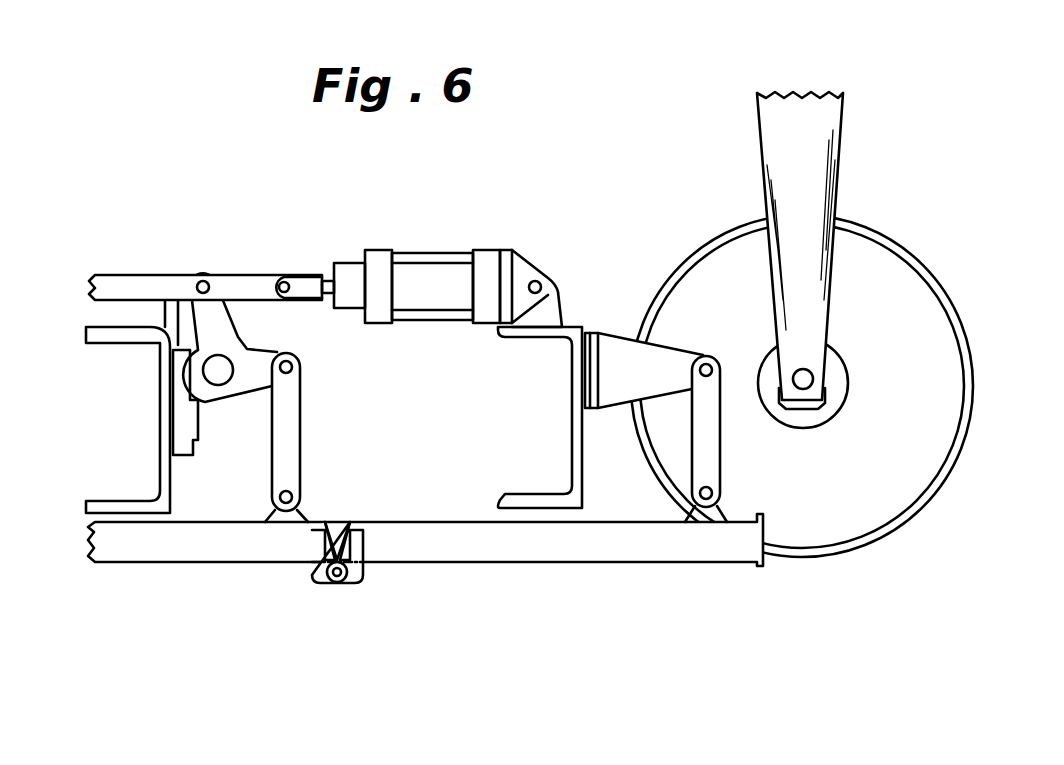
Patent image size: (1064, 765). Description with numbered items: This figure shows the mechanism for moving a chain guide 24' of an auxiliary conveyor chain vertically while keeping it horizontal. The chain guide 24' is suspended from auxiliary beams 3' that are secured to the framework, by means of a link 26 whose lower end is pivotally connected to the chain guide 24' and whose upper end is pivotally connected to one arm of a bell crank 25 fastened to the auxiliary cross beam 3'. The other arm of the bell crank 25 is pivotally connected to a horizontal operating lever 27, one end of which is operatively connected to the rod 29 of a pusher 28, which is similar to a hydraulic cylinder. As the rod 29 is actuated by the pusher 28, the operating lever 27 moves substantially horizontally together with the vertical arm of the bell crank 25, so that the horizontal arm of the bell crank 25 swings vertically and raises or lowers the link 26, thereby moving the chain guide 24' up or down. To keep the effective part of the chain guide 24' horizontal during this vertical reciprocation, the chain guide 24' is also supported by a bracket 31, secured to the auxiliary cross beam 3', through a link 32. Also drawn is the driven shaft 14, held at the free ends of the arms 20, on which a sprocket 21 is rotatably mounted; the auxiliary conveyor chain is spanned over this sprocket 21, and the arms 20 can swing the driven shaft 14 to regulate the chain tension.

The auxiliary beam 3' is at (334, 406).
The driven shaft 14 is at (822, 380).
The arm 20 is at (818, 168).
The sprocket 21 is at (975, 378).
The chain guide 24' is at (425, 571).
The bell crank 25 is at (268, 355).
The link 26 is at (300, 425).
The horizontal operating lever 27 is at (125, 280).
The pusher 28 is at (432, 275).
The rod 29 is at (327, 283).
The bracket 31 is at (612, 350).
The link 32 is at (715, 452).